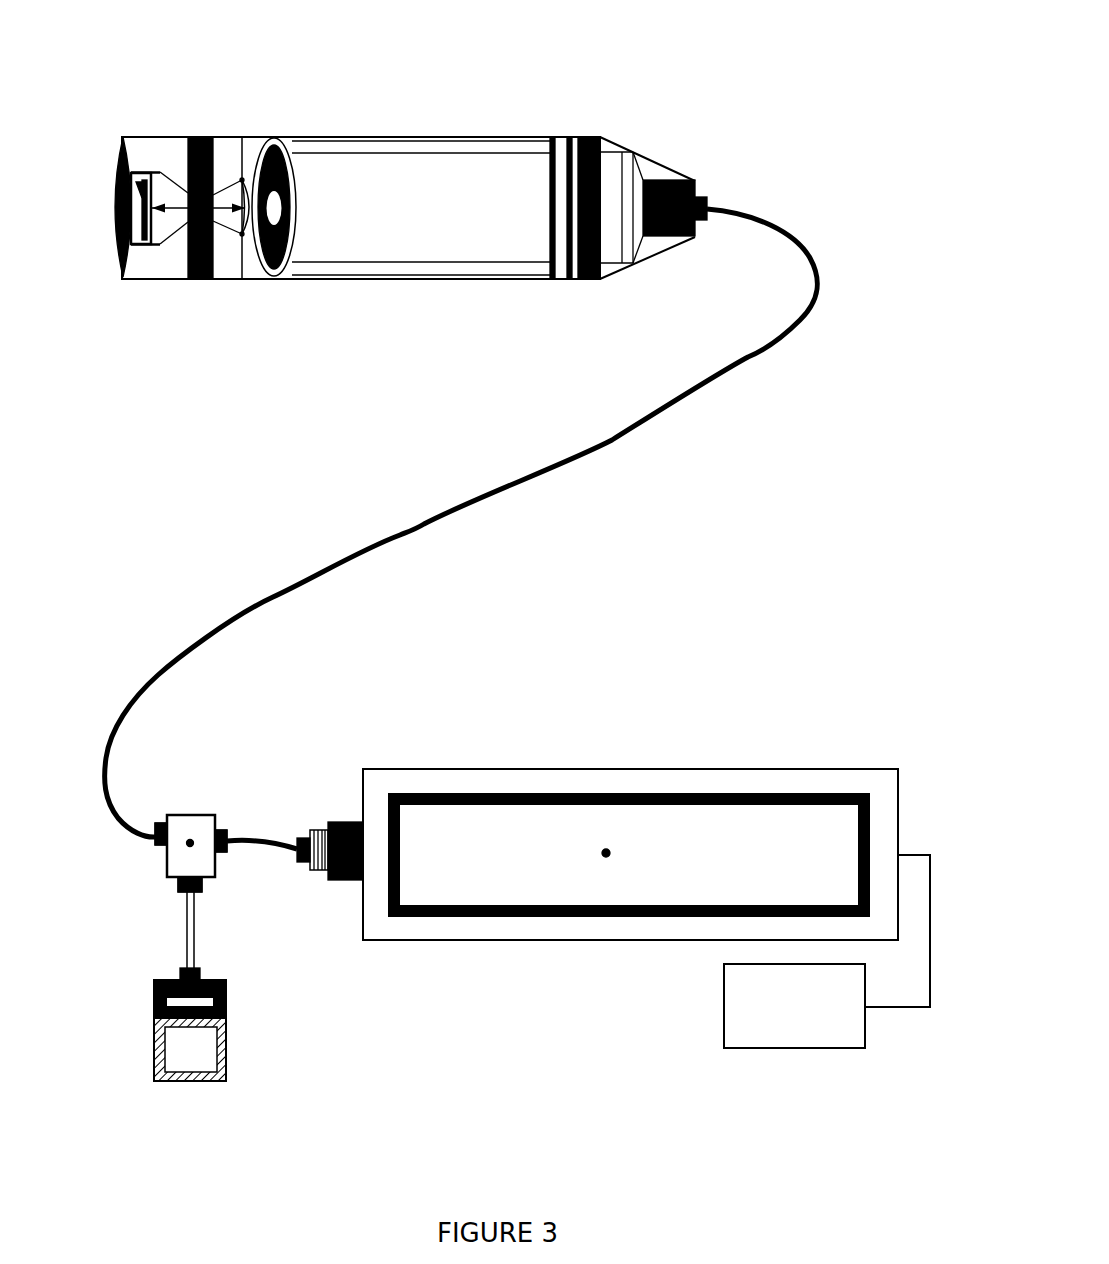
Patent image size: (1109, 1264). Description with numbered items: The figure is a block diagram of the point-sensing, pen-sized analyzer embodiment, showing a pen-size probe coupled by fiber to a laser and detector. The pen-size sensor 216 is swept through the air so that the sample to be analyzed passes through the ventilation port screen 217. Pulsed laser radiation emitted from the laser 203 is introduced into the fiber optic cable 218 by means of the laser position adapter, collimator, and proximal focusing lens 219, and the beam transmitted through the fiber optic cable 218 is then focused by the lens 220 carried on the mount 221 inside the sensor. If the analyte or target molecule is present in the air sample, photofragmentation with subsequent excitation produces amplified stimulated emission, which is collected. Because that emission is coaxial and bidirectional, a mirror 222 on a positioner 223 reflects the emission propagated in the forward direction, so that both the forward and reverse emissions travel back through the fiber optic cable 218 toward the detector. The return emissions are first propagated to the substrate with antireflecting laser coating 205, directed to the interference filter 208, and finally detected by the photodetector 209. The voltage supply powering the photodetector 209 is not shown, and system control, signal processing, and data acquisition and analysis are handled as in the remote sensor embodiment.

The laser 203 is at (646, 843).
The substrate with antireflecting laser coating 205 is at (147, 869).
The interference filter 208 is at (286, 1066).
The photodetector 209 is at (190, 1049).
The pen-size sensor 216 is at (408, 168).
The ventilation port screen 217 is at (252, 143).
The fiber optic cable 218 is at (460, 590).
The laser position adapter, collimator, and proximal focusing lens 219 is at (384, 922).
The lens 220 is at (301, 145).
The mount 221 is at (307, 250).
The mirror 222 is at (196, 267).
The positioner 223 is at (133, 165).